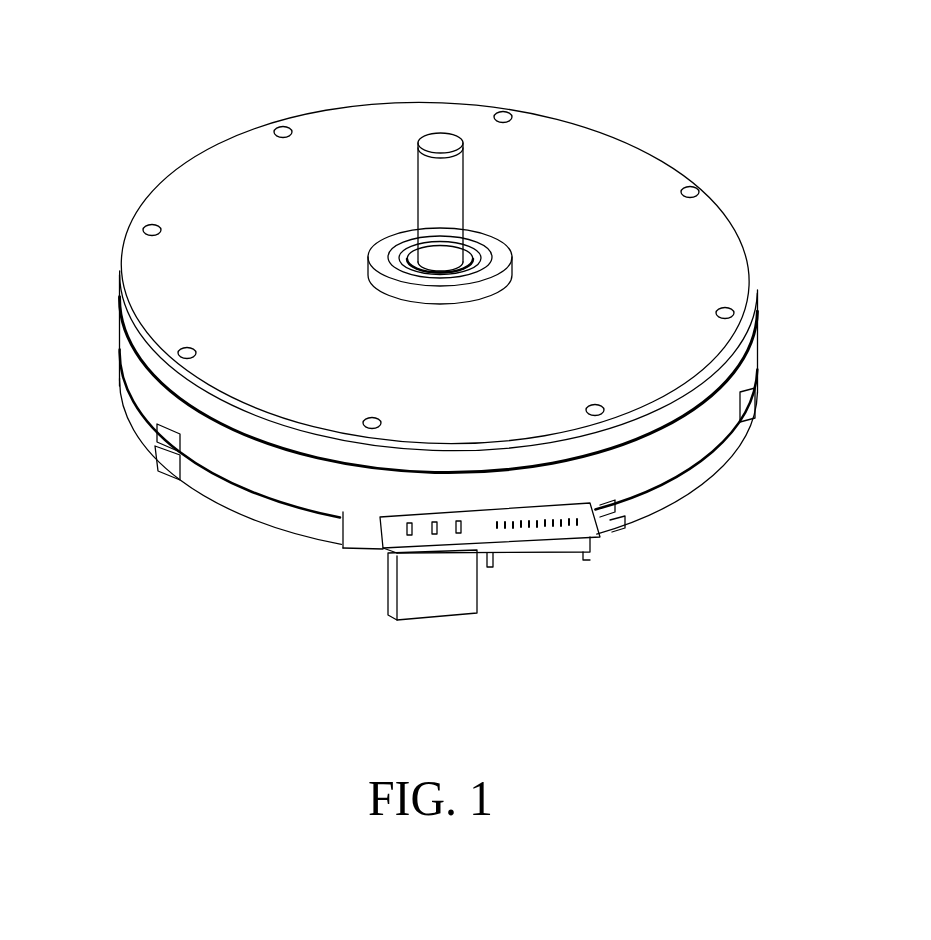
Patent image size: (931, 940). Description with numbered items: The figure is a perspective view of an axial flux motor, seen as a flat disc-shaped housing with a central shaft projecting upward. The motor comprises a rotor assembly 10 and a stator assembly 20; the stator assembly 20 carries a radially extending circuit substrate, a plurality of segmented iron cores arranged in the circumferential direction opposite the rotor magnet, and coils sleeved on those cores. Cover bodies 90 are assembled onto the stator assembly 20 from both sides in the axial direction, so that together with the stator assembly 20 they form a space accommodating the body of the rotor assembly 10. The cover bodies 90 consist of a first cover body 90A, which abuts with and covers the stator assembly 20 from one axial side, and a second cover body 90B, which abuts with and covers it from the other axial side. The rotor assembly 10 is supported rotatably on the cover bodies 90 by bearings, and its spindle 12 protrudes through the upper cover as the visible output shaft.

The rotor assembly 10 is at (436, 276).
The spindle 12 is at (425, 180).
The stator assembly 20 is at (667, 467).
The cover bodies 90 is at (389, 470).
The first cover body 90A is at (238, 507).
The second cover body 90B is at (190, 393).